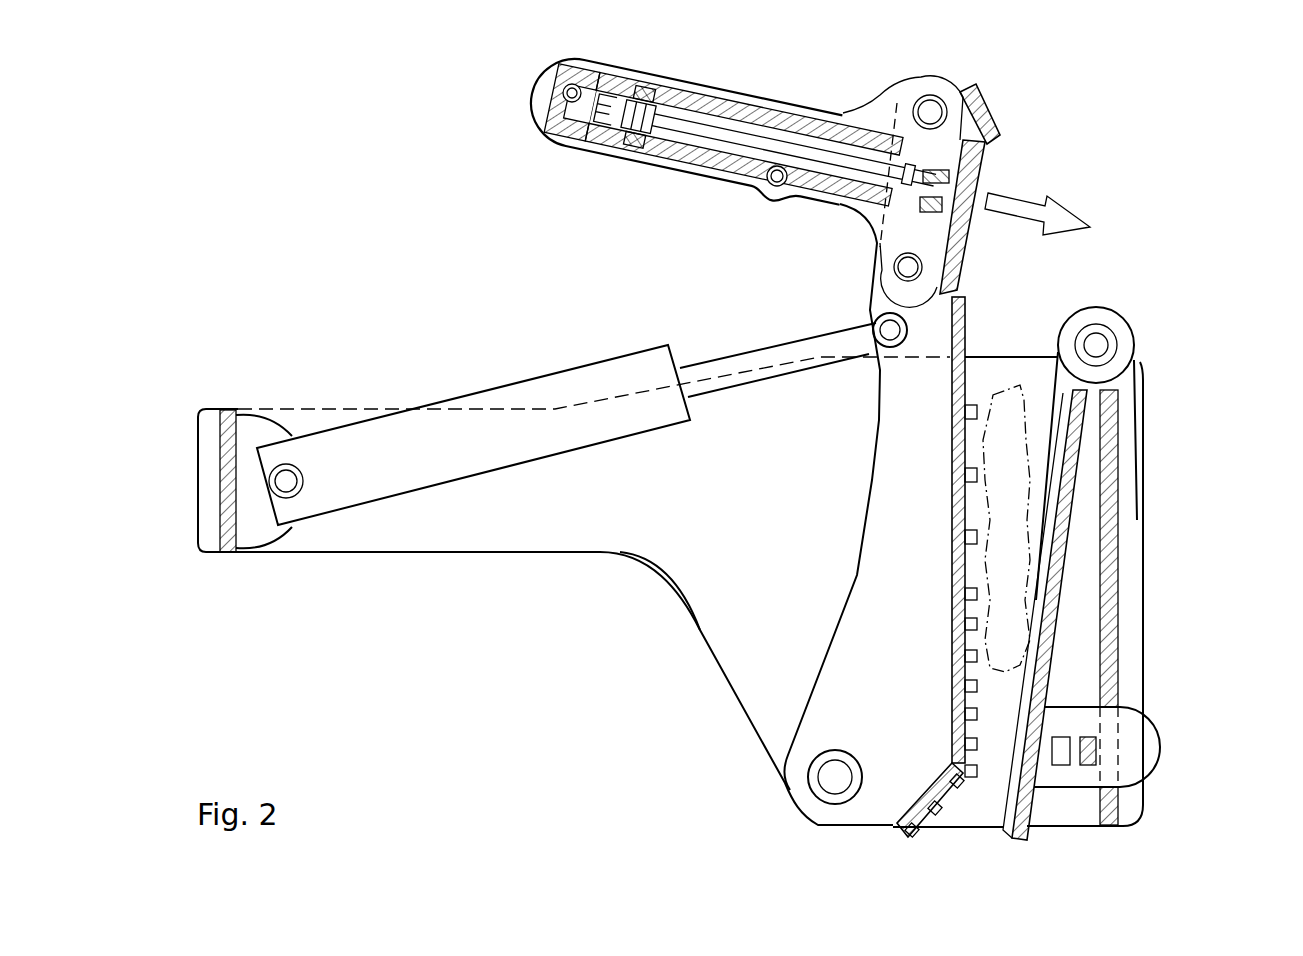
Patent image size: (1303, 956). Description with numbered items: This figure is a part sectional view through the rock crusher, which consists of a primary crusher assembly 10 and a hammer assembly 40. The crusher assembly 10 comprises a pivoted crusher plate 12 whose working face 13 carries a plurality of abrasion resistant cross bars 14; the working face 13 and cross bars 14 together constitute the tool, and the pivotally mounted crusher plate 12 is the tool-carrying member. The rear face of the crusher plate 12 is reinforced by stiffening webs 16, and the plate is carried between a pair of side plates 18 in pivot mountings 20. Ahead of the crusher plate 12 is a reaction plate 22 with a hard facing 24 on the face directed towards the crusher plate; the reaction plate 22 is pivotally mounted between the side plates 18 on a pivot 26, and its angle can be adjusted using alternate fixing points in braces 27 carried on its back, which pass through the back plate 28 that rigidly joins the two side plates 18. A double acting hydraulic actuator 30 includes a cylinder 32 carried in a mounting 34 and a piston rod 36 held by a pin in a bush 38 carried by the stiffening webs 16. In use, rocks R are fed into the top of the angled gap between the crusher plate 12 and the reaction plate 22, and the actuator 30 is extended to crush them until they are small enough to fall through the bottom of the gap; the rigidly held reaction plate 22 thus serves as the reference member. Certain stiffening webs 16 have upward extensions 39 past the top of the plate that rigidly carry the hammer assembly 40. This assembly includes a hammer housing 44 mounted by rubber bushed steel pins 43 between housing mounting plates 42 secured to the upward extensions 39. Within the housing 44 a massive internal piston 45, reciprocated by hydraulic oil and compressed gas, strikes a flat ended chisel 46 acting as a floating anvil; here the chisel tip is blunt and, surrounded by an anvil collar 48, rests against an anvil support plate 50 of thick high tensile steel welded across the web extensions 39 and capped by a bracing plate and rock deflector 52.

The primary crusher assembly 10 is at (1200, 543).
The crusher plate 12 is at (950, 417).
The working face 13 is at (977, 500).
The abrasion resistant cross bars 14 is at (986, 588).
The stiffening webs 16 is at (905, 537).
The side plates 18 is at (700, 626).
The pivot mountings 20 is at (828, 796).
The reaction plate 22 is at (1042, 678).
The hard facing 24 is at (1022, 712).
The pivot 26 is at (1105, 325).
The braces 27 is at (1147, 745).
The back plate 28 is at (1112, 640).
The double acting hydraulic actuator 30 is at (471, 371).
The cylinder 32 is at (598, 362).
The mounting 34 is at (292, 488).
The piston rod 36 is at (790, 340).
The bush 38 is at (878, 348).
The upward extensions 39 is at (870, 290).
The hammer assembly 40 is at (768, 153).
The housing mounting plates 42 is at (618, 67).
The rubber bushed steel pins 43 is at (560, 84).
The hammer housing 44 is at (565, 125).
The internal piston 45 is at (737, 133).
The flat ended chisel 46 is at (850, 157).
The anvil collar 48 is at (925, 214).
The anvil support plate 50 is at (982, 170).
The bracing plate and rock deflector 52 is at (978, 108).
The rocks R is at (1010, 395).